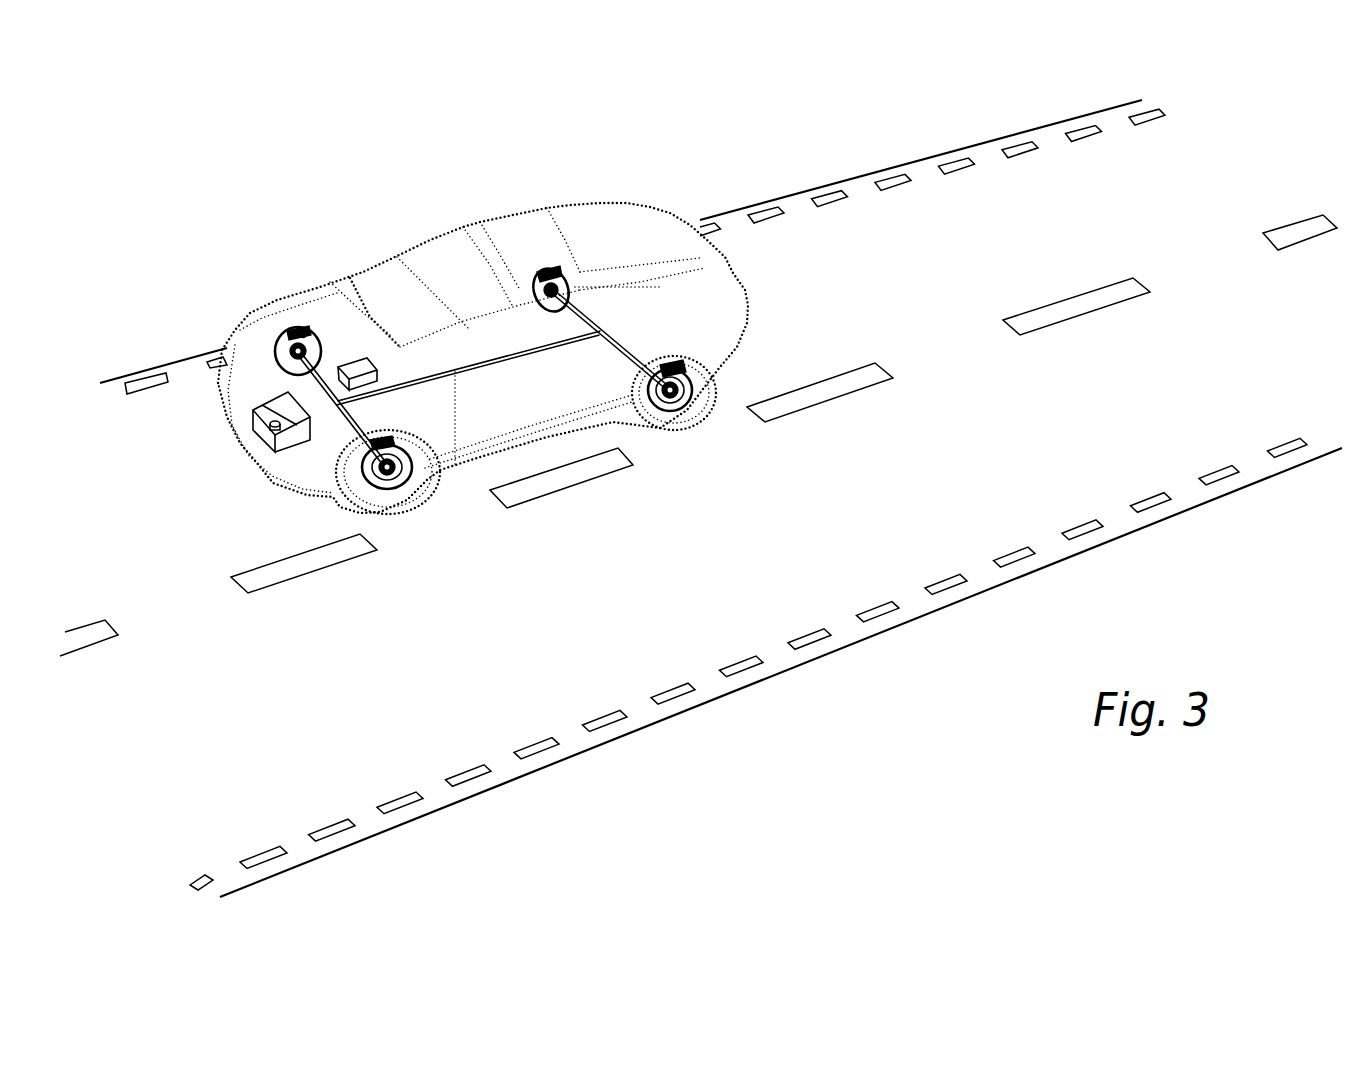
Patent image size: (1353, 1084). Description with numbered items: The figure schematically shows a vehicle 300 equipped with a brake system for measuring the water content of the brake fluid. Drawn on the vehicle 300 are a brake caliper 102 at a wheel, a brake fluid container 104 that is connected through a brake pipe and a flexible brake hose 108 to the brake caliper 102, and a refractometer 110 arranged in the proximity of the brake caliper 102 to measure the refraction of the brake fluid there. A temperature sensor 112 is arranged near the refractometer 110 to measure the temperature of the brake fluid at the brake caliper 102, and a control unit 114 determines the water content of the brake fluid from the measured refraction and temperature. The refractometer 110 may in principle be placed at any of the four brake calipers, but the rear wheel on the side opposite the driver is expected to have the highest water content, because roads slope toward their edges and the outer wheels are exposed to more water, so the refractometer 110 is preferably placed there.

The vehicle 300 is at (672, 190).
The brake caliper 102 is at (279, 340).
The brake fluid container 104 is at (257, 428).
The brake hose 108 is at (277, 347).
The refractometer 110 is at (293, 332).
The temperature sensor 112 is at (307, 328).
The control unit 114 is at (350, 366).